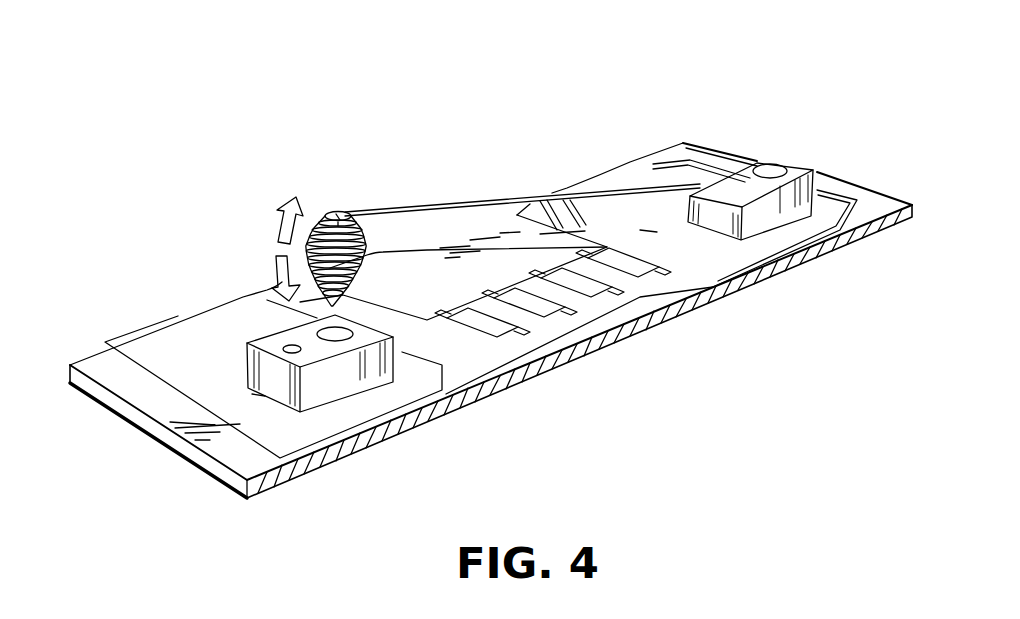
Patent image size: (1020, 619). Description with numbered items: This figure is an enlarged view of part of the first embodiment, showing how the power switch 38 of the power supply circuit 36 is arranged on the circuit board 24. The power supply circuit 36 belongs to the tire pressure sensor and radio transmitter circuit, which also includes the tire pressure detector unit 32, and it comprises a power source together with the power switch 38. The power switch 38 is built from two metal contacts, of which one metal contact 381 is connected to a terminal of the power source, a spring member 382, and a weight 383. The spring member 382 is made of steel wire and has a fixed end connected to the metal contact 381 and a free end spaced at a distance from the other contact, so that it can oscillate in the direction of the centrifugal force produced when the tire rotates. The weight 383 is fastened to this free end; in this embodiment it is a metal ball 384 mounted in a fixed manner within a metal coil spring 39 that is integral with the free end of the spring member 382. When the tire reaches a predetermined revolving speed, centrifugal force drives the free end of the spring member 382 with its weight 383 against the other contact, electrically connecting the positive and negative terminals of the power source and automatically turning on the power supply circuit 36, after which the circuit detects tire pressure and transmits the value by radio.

The power supply circuit 36 is at (462, 75).
The tire pressure detector unit 32 is at (627, 157).
The circuit board 24 is at (683, 143).
The power switch 38 is at (800, 162).
The metal contact 381 is at (335, 396).
The spring member 382 is at (512, 198).
The weight 383 is at (343, 215).
The metal ball 384 is at (350, 180).
The metal coil spring 39 is at (318, 218).